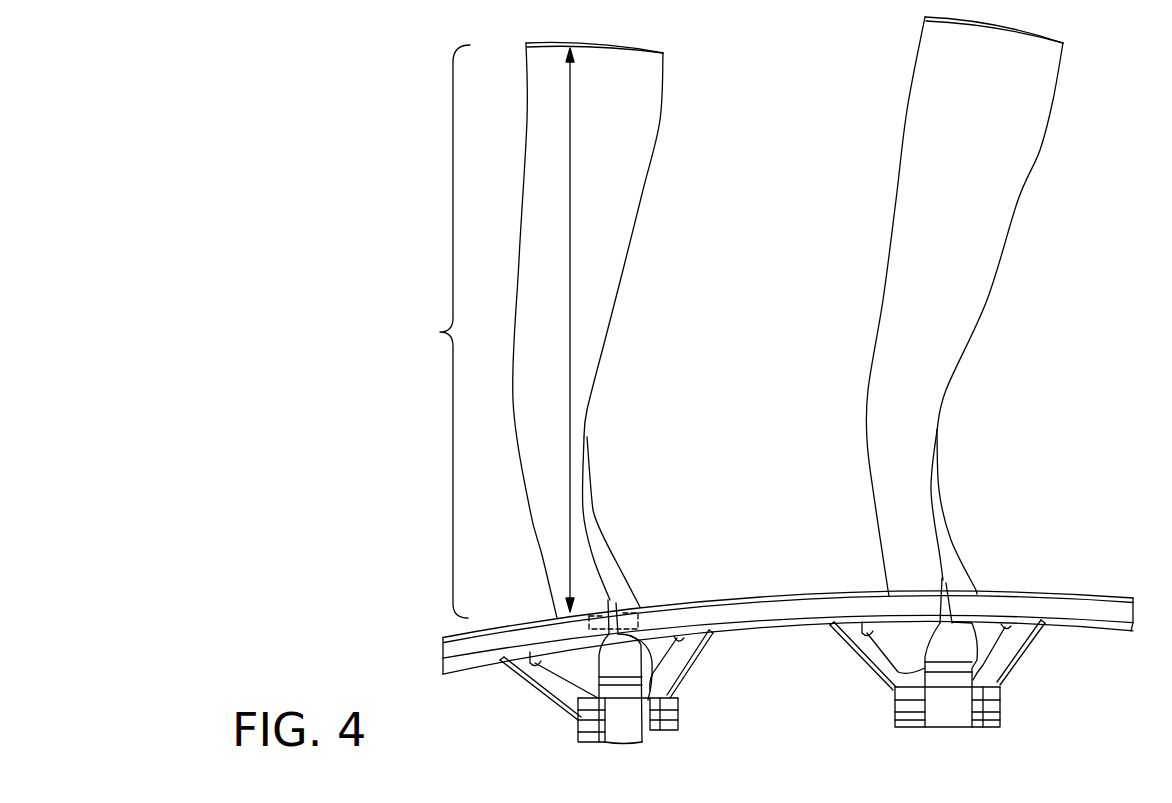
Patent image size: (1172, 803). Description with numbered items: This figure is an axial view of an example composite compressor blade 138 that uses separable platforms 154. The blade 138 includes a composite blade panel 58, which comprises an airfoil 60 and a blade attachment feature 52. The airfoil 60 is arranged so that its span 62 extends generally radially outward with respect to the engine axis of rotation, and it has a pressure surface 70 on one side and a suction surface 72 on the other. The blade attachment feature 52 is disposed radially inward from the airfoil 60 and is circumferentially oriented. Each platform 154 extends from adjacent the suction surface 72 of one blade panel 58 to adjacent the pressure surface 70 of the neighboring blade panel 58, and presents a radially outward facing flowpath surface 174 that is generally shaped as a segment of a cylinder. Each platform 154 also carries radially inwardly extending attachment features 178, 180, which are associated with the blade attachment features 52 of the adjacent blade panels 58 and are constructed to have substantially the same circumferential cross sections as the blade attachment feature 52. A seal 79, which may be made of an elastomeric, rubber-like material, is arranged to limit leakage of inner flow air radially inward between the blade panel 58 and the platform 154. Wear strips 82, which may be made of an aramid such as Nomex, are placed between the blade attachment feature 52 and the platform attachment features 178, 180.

The composite compressor blade 138 is at (398, 178).
The airfoil 60 is at (440, 332).
The composite blade panel 58 is at (522, 162).
The span 62 is at (583, 183).
The pressure surface 70 is at (552, 252).
The suction surface 72 is at (603, 565).
The seal 79 is at (617, 608).
The flowpath surface 174 is at (748, 597).
The platform 154 is at (497, 629).
The attachment feature 178 is at (678, 708).
The attachment feature 180 is at (893, 692).
The wear strip 82 is at (576, 722).
The blade attachment feature 52 is at (633, 742).